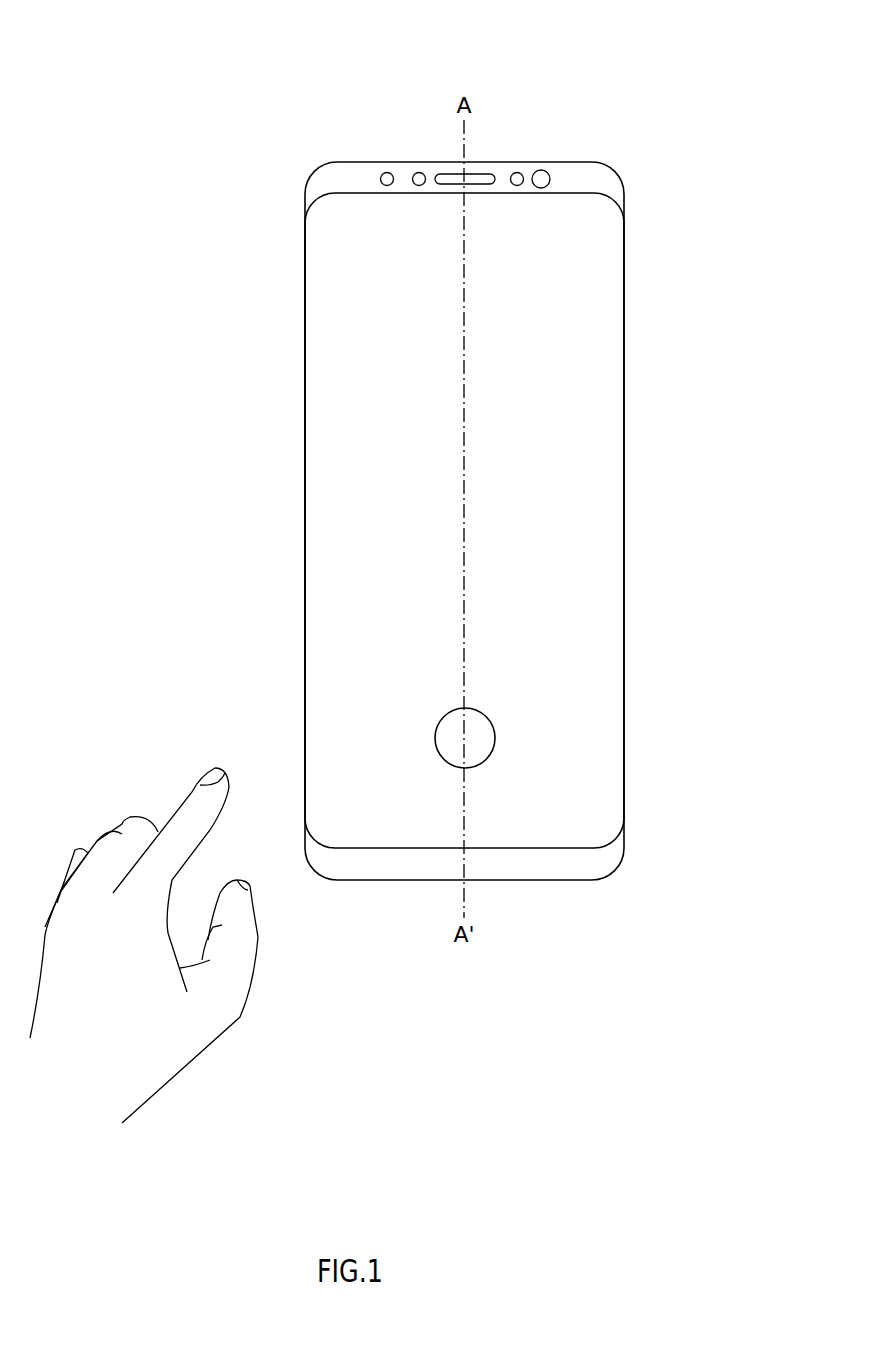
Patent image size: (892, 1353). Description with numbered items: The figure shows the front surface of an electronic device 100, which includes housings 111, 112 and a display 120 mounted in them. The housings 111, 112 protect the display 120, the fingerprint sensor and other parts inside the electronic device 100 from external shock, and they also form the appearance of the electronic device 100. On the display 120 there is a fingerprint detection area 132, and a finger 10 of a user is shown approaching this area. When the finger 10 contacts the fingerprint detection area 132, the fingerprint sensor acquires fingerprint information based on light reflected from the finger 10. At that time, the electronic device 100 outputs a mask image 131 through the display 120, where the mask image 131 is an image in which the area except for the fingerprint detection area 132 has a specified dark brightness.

The finger 10 is at (198, 810).
The electronic device 100 is at (521, 105).
The housing 111 is at (575, 178).
The housing 112 is at (565, 868).
The display 120 is at (633, 192).
The mask image 131 is at (316, 293).
The fingerprint detection area 132 is at (443, 738).